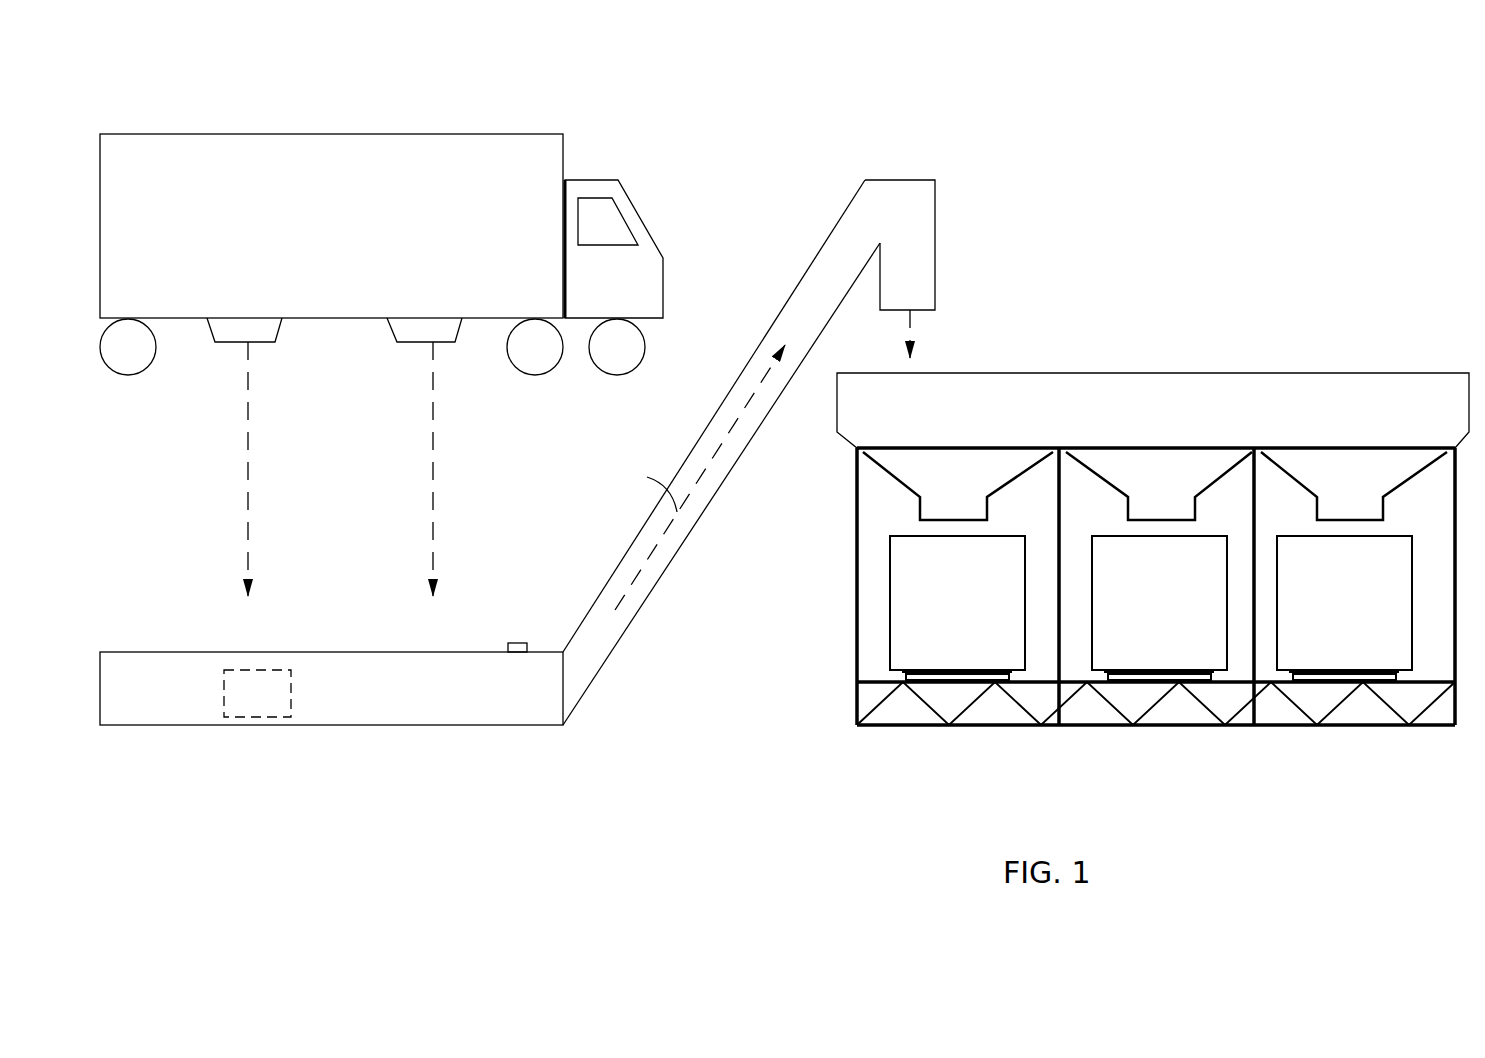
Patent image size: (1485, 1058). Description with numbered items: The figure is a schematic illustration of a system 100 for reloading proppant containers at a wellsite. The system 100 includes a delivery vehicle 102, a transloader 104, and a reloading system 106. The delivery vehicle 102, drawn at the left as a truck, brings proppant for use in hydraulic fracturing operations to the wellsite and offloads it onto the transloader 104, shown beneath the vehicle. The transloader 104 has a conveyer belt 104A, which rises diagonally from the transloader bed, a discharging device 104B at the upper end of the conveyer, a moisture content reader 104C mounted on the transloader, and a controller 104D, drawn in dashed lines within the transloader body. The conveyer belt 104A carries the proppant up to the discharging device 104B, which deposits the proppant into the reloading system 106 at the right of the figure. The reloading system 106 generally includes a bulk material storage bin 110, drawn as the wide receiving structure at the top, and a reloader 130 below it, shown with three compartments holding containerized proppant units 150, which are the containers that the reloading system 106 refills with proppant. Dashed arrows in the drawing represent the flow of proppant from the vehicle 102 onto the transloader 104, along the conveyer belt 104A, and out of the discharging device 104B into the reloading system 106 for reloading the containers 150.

The system for reloading proppant containers 100 is at (1120, 170).
The delivery vehicle 102 is at (647, 160).
The transloader 104 is at (568, 476).
The conveyer belt 104A is at (596, 603).
The discharging device 104B is at (937, 260).
The moisture content reader 104C is at (527, 643).
The controller 104D is at (257, 693).
The reloading system 106 is at (1116, 482).
The bulk material storage bin 110 is at (1175, 373).
The reloader 130 is at (856, 617).
The containerized proppant units 150 is at (940, 614).